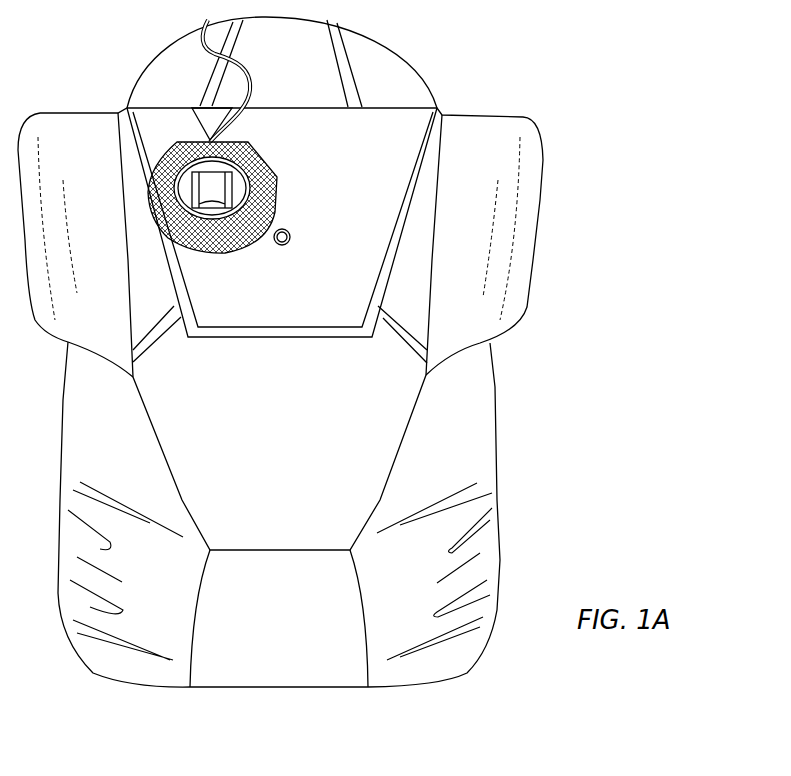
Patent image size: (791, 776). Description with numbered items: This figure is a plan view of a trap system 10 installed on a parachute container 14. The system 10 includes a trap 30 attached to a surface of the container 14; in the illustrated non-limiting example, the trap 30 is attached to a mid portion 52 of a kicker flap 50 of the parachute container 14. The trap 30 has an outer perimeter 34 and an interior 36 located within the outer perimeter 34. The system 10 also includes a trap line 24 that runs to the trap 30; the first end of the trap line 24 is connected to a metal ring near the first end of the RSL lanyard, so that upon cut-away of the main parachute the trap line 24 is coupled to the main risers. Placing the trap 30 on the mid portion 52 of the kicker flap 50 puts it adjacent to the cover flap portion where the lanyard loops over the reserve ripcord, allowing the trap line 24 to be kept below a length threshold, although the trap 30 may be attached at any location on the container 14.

The trap system 10 is at (289, 352).
The parachute container 14 is at (496, 388).
The trap line 24 is at (249, 68).
The trap 30 is at (289, 146).
The outer perimeter 34 is at (244, 254).
The interior 36 is at (212, 218).
The kicker flap 50 is at (357, 272).
The mid portion 52 is at (378, 140).